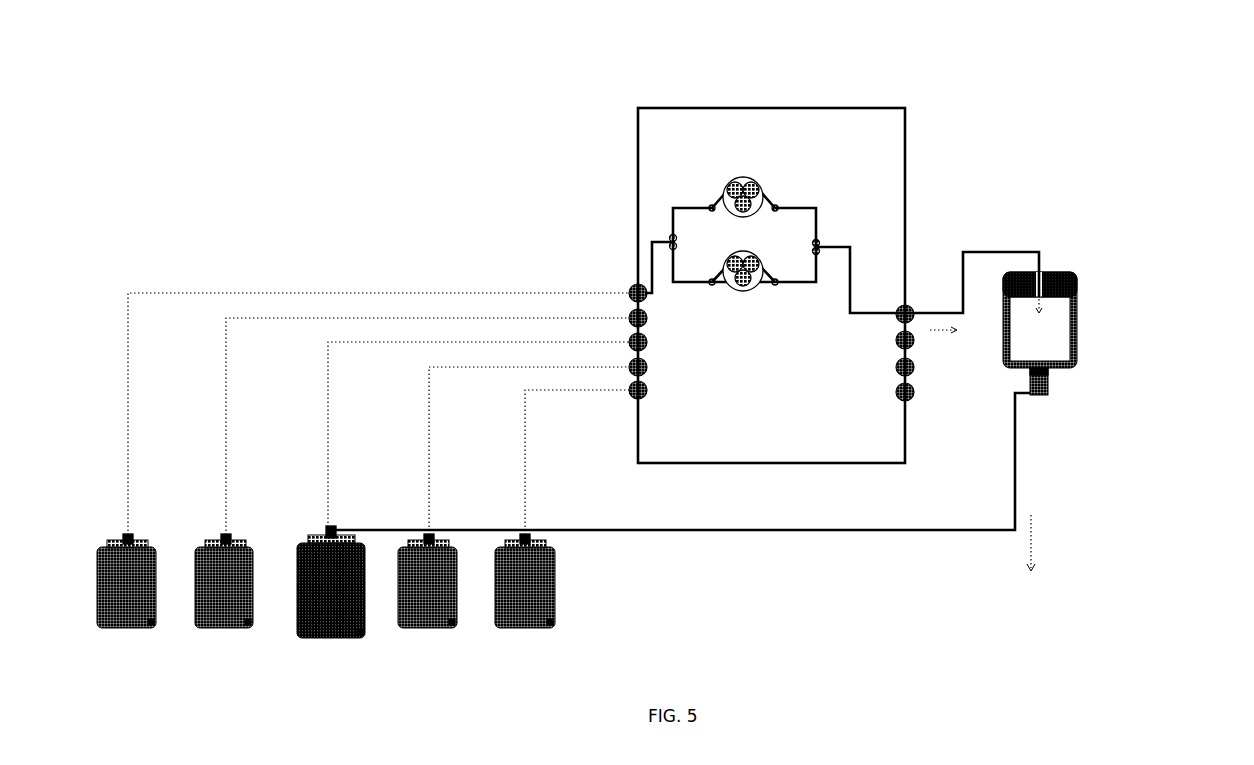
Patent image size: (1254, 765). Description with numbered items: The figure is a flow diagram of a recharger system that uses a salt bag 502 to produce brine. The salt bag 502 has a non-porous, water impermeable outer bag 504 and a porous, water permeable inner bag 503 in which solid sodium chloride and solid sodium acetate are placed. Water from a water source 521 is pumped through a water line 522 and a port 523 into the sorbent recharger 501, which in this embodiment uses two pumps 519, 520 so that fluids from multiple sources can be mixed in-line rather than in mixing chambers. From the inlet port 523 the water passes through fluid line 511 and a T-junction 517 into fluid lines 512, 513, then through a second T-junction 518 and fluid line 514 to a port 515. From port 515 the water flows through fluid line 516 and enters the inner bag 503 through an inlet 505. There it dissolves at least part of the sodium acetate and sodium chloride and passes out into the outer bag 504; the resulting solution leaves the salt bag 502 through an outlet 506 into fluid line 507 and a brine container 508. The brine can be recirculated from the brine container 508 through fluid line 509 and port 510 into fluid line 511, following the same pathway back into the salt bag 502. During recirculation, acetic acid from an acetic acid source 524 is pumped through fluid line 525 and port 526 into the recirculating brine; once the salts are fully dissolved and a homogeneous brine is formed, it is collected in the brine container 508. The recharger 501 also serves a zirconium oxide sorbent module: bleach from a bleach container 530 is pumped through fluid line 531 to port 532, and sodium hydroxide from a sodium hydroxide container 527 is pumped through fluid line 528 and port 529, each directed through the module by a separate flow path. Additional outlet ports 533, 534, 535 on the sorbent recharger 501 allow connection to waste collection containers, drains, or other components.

The sorbent recharger 501 is at (882, 125).
The salt bag 502 is at (1060, 270).
The inner bag 503 is at (1055, 345).
The outer bag 504 is at (1080, 320).
The inlet 505 is at (1080, 283).
The outlet 506 is at (1033, 397).
The fluid line 507 is at (932, 533).
The brine container 508 is at (330, 620).
The fluid line 509 is at (328, 462).
The port 510 is at (630, 340).
The fluid line 511 is at (652, 243).
The fluid line 512 is at (807, 207).
The fluid line 513 is at (808, 284).
The fluid line 514 is at (853, 248).
The port 515 is at (907, 306).
The fluid line 516 is at (975, 250).
The T-junction 517 is at (670, 236).
The T-junction 518 is at (819, 241).
The pump 519 is at (743, 177).
The pump 520 is at (752, 292).
The water source 521 is at (116, 628).
The water line 522 is at (127, 492).
The port 523 is at (632, 288).
The acetic acid source 524 is at (522, 632).
The fluid line 525 is at (530, 485).
The port 526 is at (648, 397).
The sodium hydroxide container 527 is at (425, 632).
The fluid line 528 is at (429, 490).
The port 529 is at (648, 370).
The bleach container 530 is at (223, 628).
The fluid line 531 is at (225, 492).
The port 532 is at (630, 315).
The outlet port 533 is at (897, 345).
The outlet port 534 is at (915, 368).
The outlet port 535 is at (913, 398).